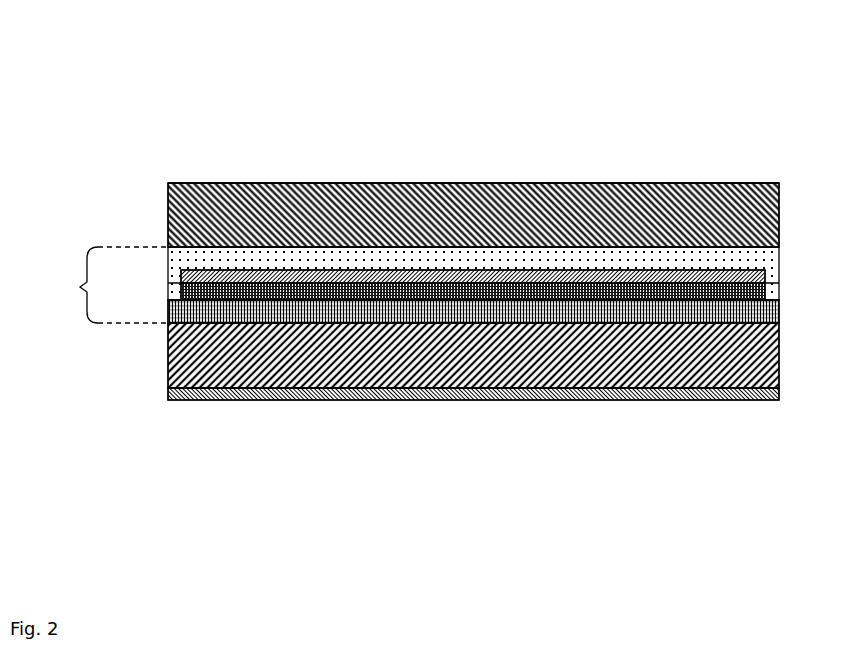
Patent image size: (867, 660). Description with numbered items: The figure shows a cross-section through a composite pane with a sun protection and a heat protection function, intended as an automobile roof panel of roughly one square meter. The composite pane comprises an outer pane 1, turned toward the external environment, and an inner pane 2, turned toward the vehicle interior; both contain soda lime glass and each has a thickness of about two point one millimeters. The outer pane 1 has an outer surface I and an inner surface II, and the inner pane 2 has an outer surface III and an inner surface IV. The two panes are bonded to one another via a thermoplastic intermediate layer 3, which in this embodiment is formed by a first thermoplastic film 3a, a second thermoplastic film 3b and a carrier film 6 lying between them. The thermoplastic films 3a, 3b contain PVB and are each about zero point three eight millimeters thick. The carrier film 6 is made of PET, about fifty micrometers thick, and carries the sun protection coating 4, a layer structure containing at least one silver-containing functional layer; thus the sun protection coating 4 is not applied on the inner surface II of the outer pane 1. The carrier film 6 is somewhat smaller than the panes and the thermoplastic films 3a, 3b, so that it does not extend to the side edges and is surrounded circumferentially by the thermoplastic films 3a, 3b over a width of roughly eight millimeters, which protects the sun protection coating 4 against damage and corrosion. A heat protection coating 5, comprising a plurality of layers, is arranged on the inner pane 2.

The outer pane 1 is at (203, 213).
The inner pane 2 is at (207, 343).
The thermoplastic intermediate layer 3 is at (99, 285).
The first thermoplastic film 3a is at (202, 257).
The second thermoplastic film 3b is at (202, 312).
The sun protection coating 4 is at (765, 278).
The heat protection coating 5 is at (691, 388).
The carrier film 6 is at (750, 290).
The outer surface of the outer pane I is at (511, 178).
The inner surface of the outer pane II is at (637, 243).
The outer surface of the inner pane III is at (374, 330).
The inner surface of the inner pane IV is at (468, 396).